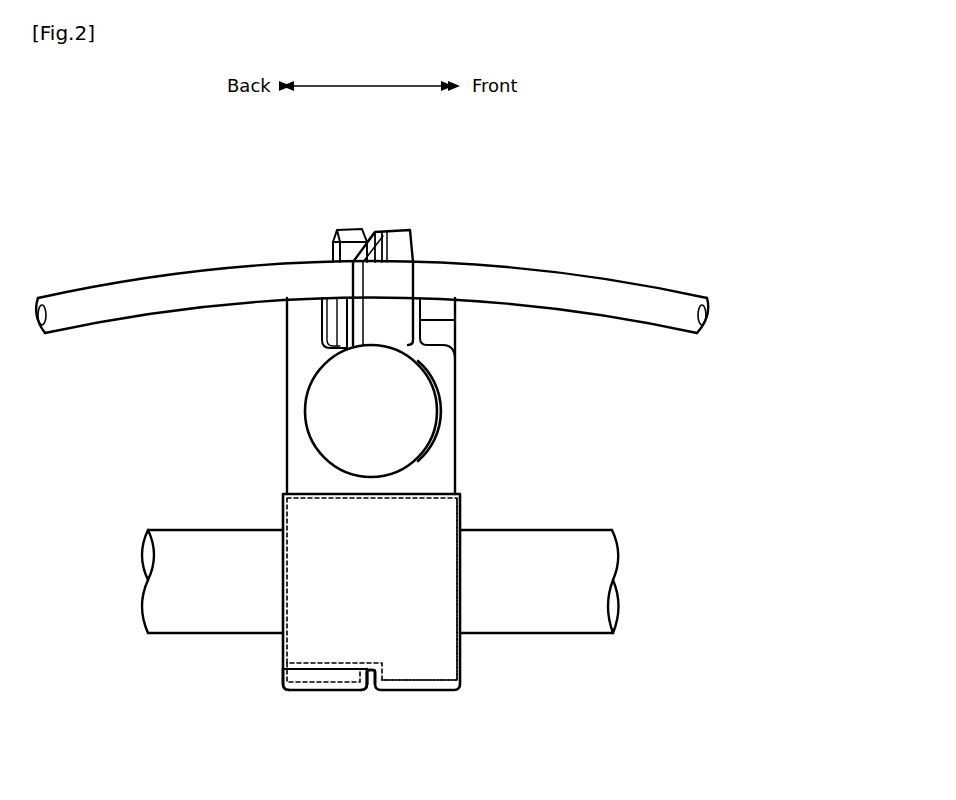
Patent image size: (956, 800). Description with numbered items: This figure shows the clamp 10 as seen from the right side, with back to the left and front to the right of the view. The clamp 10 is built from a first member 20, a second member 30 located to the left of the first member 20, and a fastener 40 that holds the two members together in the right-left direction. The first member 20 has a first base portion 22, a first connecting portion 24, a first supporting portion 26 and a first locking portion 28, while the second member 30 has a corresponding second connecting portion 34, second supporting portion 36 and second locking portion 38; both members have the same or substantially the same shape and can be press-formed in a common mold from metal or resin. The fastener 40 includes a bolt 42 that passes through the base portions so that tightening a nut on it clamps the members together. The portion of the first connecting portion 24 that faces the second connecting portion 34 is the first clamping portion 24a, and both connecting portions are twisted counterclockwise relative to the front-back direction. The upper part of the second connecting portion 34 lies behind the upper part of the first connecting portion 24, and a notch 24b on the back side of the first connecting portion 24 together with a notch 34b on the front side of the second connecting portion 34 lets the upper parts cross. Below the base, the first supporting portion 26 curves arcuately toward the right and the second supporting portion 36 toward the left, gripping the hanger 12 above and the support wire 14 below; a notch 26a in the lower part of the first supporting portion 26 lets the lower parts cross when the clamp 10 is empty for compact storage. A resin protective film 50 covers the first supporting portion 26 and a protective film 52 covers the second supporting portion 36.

The clamp 10 is at (340, 205).
The hanger 12 is at (178, 290).
The support wire 14 is at (227, 540).
The first member 20 is at (281, 392).
The first base portion 22 is at (293, 428).
The first connecting portion 24 is at (436, 265).
The first clamping portion 24a is at (374, 318).
The notch 24b is at (387, 240).
The first supporting portion 26 is at (420, 675).
The notch 26a is at (350, 675).
The first locking portion 28 is at (293, 314).
The second member 30 is at (487, 324).
The second connecting portion 34 is at (330, 247).
The notch 34b is at (372, 245).
The second supporting portion 36 is at (322, 678).
The second locking portion 38 is at (448, 338).
The fastener 40 is at (439, 425).
The bolt 42 is at (435, 410).
The protective film 50 is at (373, 625).
The protective film 52 is at (283, 688).